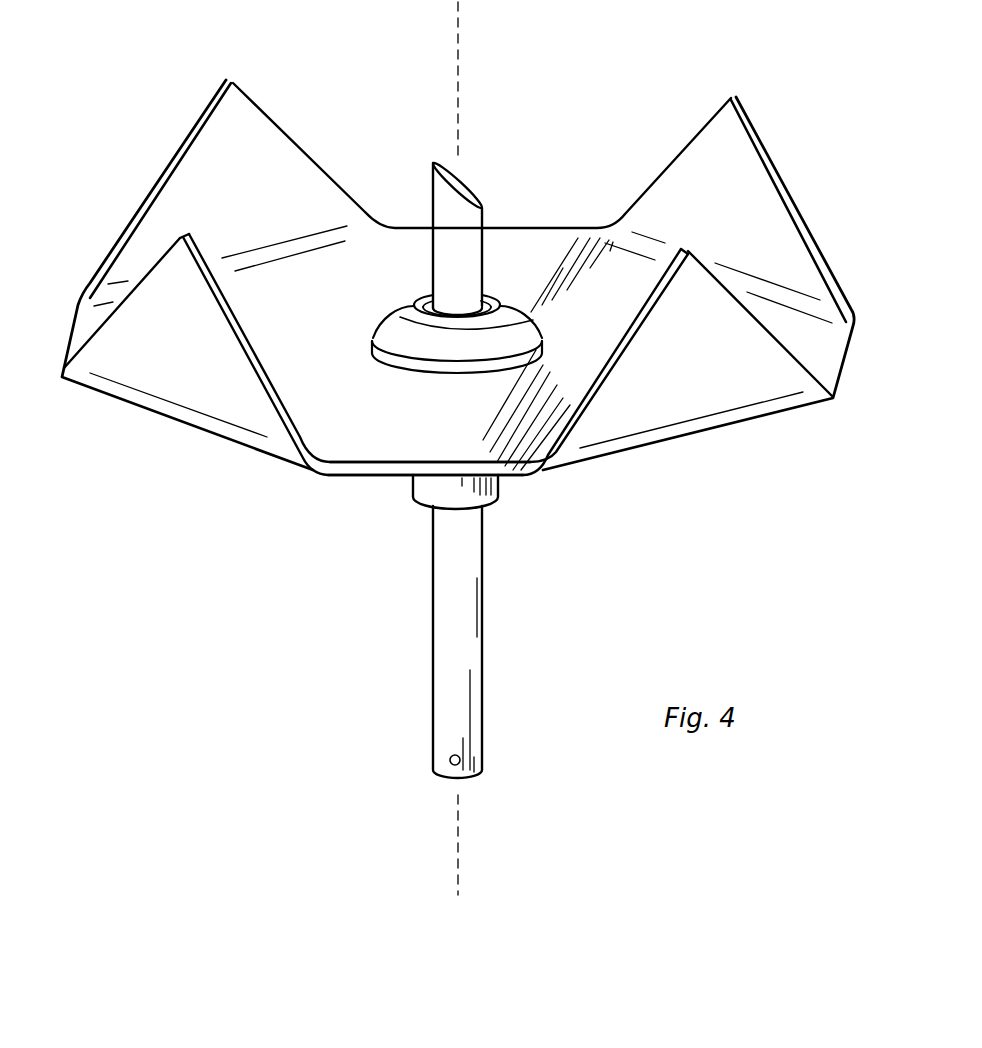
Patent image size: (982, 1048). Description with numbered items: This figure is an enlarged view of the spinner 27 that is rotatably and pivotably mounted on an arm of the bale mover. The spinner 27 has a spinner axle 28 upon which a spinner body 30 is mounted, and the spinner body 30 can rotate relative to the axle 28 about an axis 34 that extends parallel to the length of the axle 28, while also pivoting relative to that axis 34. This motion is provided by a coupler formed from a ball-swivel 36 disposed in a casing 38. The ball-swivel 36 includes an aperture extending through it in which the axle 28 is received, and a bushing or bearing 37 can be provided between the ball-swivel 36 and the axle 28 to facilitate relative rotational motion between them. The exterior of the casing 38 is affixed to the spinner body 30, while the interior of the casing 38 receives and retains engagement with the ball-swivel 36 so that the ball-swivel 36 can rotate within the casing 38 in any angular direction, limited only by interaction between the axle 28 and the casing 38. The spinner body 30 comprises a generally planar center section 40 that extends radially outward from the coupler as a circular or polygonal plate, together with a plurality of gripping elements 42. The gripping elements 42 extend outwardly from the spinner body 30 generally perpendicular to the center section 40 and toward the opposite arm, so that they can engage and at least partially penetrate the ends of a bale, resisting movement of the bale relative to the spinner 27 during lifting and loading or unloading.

The spinner 27 is at (649, 517).
The spinner axle 28 is at (468, 184).
The spinner body 30 is at (752, 424).
The axis 34 is at (463, 64).
The ball-swivel 36 is at (425, 323).
The bushing or bearing 37 is at (489, 308).
The casing 38 is at (388, 324).
The center section 40 is at (356, 433).
The gripping elements 42 is at (267, 115).